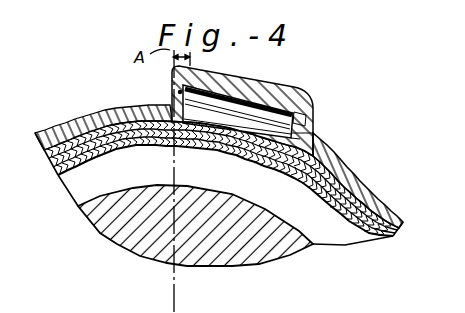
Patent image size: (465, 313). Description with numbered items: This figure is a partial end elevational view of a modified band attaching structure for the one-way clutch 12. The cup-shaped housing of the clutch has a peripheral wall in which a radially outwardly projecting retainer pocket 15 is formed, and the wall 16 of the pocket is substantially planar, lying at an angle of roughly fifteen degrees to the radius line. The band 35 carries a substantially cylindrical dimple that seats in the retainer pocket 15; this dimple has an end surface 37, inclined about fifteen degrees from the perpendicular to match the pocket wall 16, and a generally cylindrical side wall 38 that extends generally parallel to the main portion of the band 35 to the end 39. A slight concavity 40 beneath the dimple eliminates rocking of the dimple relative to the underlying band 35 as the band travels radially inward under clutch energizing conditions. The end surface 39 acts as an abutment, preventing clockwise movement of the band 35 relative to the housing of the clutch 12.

The one-way clutch 12 is at (400, 200).
The retainer pocket 15 is at (252, 83).
The wall of the pocket 16 is at (178, 91).
The band 35 is at (71, 131).
The end surface 37 is at (172, 100).
The cylindrical side wall 38 is at (300, 117).
The end of the dimple 39 is at (293, 133).
The concavity 40 is at (230, 128).